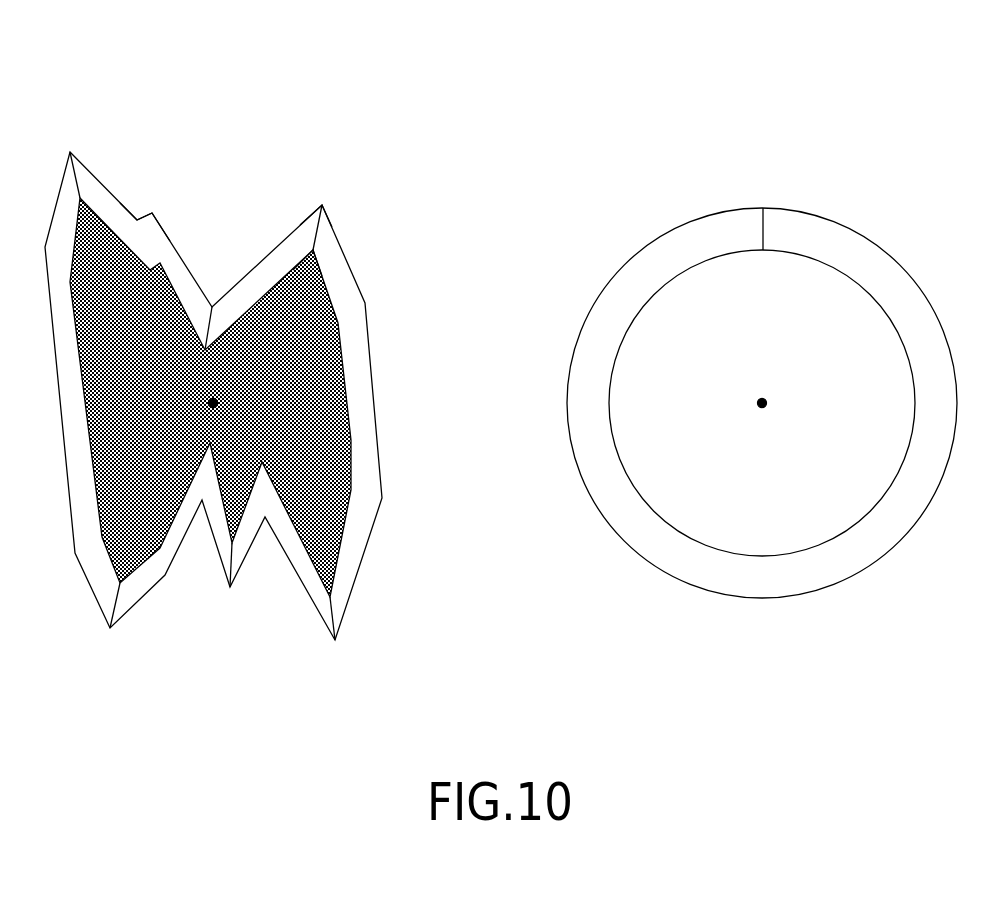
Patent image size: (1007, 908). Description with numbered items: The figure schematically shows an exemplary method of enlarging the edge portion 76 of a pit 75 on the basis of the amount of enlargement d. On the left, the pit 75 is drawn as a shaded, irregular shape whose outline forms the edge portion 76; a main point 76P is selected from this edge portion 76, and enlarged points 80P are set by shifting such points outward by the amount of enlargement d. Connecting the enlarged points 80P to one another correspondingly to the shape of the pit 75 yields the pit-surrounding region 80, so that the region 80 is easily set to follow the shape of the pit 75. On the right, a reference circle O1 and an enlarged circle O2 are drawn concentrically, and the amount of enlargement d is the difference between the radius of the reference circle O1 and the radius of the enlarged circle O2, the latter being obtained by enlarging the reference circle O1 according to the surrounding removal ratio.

The pit 75 is at (332, 355).
The edge portion 76 is at (350, 437).
The main point 76P is at (313, 250).
The pit-surrounding region 80 is at (146, 224).
The enlarged point 80P is at (322, 207).
The amount of enlargement d is at (72, 177).
The reference circle O1 is at (863, 285).
The enlarged circle O2 is at (826, 217).